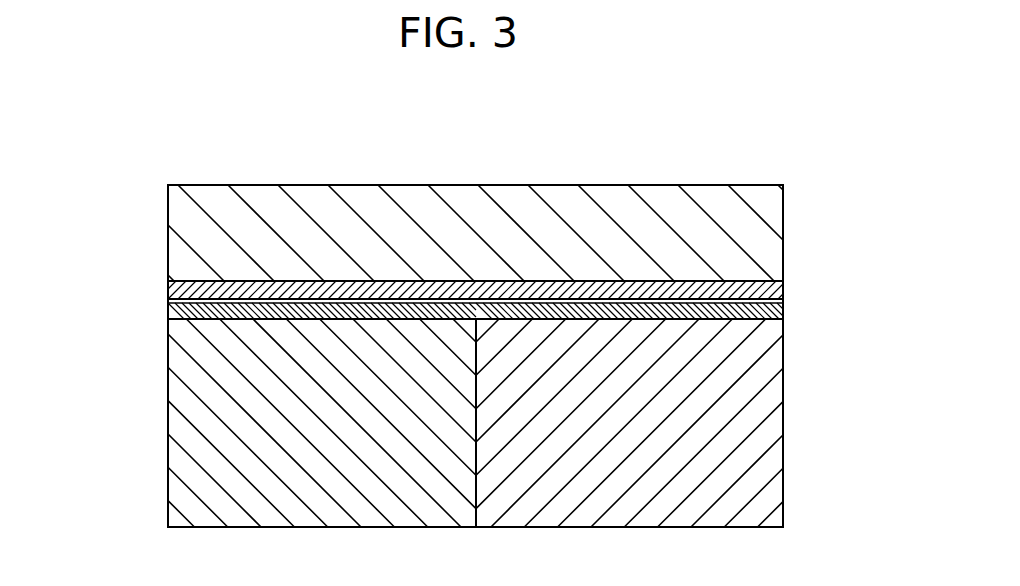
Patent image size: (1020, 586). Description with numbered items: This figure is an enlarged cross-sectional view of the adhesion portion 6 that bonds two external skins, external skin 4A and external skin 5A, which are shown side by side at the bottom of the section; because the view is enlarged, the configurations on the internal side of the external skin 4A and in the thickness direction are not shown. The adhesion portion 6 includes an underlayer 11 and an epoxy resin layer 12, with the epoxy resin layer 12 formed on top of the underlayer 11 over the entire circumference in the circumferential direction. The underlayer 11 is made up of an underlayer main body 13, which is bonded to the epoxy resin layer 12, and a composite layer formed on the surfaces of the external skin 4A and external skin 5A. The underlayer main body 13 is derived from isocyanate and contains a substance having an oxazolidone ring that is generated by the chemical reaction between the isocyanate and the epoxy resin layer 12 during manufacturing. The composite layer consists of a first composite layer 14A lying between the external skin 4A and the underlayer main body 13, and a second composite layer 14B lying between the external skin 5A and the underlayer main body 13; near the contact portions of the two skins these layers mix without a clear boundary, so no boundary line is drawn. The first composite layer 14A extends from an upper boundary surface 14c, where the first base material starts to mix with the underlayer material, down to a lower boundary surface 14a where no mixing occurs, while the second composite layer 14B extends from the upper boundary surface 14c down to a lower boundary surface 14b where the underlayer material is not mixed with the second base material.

The adhesion portion 6 is at (850, 218).
The epoxy resin layer 12 is at (765, 234).
The underlayer 11 is at (792, 282).
The underlayer main body 13 is at (168, 288).
The upper boundary surface 14c is at (400, 281).
The second composite layer 14B is at (168, 307).
The first composite layer 14A is at (720, 319).
The lower boundary surface 14b is at (276, 319).
The lower boundary surface 14a is at (672, 319).
The external skin 5A is at (205, 416).
The external skin 4A is at (712, 445).